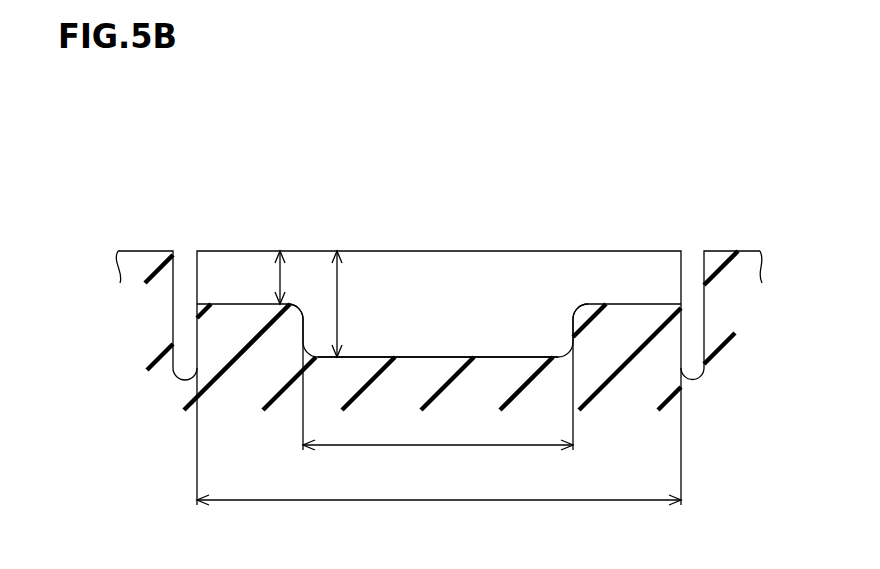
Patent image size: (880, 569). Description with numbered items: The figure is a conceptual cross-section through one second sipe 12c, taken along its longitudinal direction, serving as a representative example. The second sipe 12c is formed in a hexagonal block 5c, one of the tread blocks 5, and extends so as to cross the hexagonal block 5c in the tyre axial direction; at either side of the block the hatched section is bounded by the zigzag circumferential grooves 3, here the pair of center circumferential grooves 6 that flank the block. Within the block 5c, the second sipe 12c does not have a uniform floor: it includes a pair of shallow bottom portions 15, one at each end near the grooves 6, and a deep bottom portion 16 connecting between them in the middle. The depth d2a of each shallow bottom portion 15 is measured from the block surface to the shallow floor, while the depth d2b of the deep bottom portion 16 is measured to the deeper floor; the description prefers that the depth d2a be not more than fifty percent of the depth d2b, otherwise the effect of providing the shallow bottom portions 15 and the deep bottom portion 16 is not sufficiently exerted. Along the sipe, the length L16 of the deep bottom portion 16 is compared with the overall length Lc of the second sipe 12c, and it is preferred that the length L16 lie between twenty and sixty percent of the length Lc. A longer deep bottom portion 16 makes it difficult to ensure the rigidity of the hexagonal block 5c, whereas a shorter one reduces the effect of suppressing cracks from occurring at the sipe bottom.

The second sipe 12c is at (426, 223).
The shallow bottom portion 15 is at (241, 275).
The deep bottom portion 16 is at (449, 328).
The hexagonal block 5c is at (625, 248).
The housing body 5 is at (432, 284).
The center circumferential groove 6 is at (183, 248).
The zigzag circumferential groove 3 is at (439, 269).
The depth of shallow bottom portion d2a is at (280, 277).
The depth of deep bottom portion d2b is at (337, 302).
The length of deep bottom portion L16 is at (438, 409).
The length of second sipe Lc is at (439, 450).